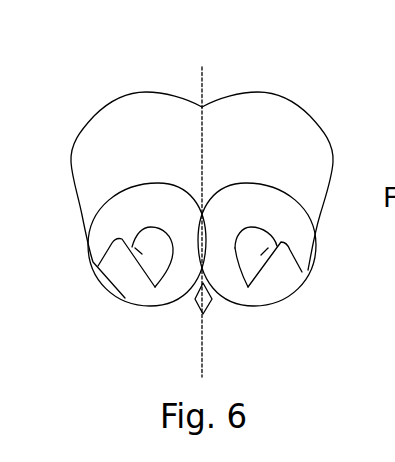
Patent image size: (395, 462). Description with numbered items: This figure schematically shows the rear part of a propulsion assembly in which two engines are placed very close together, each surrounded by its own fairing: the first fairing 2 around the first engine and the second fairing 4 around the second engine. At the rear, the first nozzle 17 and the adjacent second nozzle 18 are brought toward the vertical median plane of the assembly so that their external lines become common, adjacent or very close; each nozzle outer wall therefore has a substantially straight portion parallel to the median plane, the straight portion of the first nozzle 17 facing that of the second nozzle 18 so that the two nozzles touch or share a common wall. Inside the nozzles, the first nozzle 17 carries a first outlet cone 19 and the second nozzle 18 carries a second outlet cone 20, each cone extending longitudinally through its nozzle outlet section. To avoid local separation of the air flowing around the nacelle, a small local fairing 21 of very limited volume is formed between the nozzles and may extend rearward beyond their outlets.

The first fairing 2 is at (95, 131).
The second fairing 4 is at (307, 158).
The first nozzle 17 is at (121, 288).
The second nozzle 18 is at (280, 283).
The first outlet cone 19 is at (93, 262).
The second outlet cone 20 is at (303, 266).
The small local fairing 21 is at (212, 304).